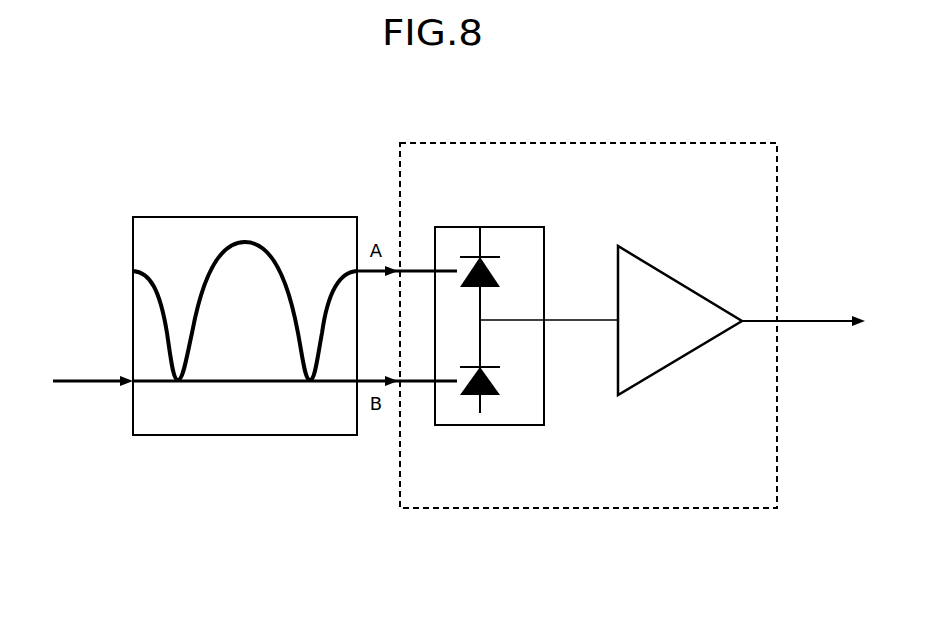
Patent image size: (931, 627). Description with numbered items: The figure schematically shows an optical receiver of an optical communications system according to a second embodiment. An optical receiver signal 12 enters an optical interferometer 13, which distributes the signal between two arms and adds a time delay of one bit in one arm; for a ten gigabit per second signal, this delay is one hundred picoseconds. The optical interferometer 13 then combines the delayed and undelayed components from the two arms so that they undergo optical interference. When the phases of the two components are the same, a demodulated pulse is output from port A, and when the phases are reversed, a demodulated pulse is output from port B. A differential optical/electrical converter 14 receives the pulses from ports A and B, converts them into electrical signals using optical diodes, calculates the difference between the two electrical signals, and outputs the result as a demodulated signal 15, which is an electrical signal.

The optical receiver signal 12 is at (78, 384).
The optical interferometer 13 is at (285, 216).
The differential optical/electrical converter 14 is at (708, 143).
The demodulated signal 15 is at (808, 322).